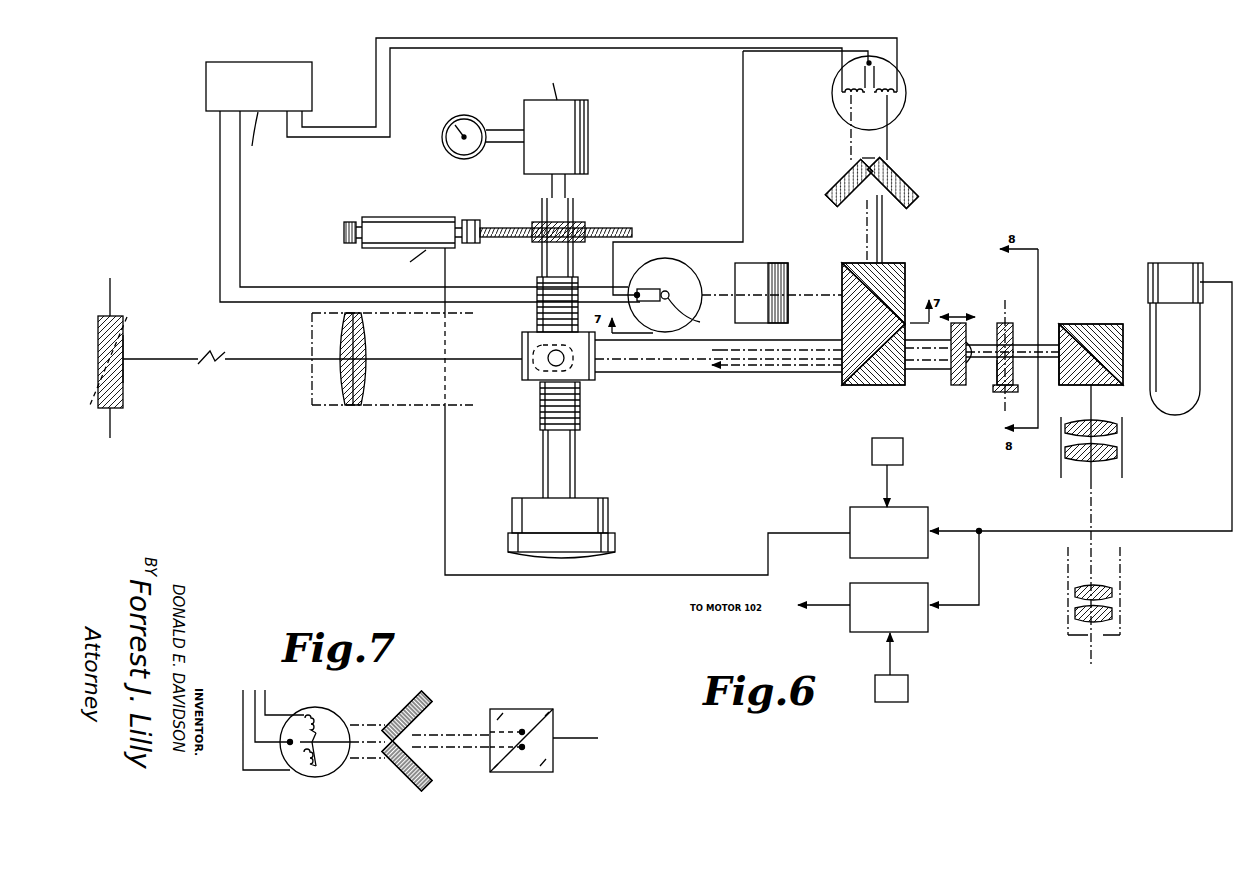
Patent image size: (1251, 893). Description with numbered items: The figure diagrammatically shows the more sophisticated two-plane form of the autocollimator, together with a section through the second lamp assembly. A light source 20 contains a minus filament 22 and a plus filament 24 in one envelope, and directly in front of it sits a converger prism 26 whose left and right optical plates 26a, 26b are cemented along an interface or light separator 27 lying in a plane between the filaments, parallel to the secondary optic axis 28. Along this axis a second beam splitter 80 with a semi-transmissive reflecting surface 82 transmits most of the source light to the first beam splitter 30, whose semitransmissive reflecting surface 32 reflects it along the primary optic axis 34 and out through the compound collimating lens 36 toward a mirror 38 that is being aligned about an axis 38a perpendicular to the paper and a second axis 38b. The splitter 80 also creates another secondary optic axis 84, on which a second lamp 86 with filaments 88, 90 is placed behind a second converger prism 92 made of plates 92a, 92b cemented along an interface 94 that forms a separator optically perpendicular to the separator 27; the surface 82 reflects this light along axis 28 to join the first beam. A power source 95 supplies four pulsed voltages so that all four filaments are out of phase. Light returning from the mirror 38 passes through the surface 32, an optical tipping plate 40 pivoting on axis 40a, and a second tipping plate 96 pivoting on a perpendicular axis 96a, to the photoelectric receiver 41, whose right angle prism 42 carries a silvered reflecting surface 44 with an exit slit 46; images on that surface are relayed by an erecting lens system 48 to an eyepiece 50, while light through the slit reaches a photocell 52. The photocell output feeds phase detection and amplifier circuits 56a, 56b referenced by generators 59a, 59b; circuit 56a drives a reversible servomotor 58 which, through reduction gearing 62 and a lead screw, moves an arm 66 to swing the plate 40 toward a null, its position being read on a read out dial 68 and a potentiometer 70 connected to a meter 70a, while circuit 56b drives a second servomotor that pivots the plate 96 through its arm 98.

In FIG. 6, the light source 20 is at (912, 78).
In FIG. 6, the minus filament 22 is at (906, 96).
In FIG. 6, the plus filament 24 is at (840, 100).
In FIG. 6, the converger prism 26 is at (913, 180).
In FIG. 6, the left optical plate 26a is at (832, 183).
In FIG. 6, the right optical plate 26b is at (916, 200).
In FIG. 6, the interface or light separator 27 is at (856, 162).
In FIG. 6, the optic axis 28 is at (884, 246).
In FIG. 6, the beam splitter 30 is at (880, 387).
In FIG. 6, the semitransmissive reflecting surface 32 is at (850, 380).
In FIG. 6, the optic axis 34 is at (655, 362).
In FIG. 6, the collimating lens 36 is at (356, 406).
In FIG. 6, the mirror 38 is at (124, 396).
In FIG. 6, the axis 38a is at (124, 357).
In FIG. 6, the second axis 38b is at (112, 284).
In FIG. 6, the optical tipping plate 40 is at (961, 387).
In FIG. 6, the pivotal axis 40a is at (970, 343).
In FIG. 6, the photoelectric receiver 41 is at (1121, 284).
In FIG. 6, the right angle prism 42 is at (1081, 325).
In FIG. 6, the reflecting surface 44 is at (1115, 387).
In FIG. 6, the exit slit 46 is at (1095, 336).
In FIG. 6, the erecting lens system 48 is at (1131, 453).
In FIG. 6, the eyepiece 50 is at (1131, 604).
In FIG. 6, the photocell 52 is at (1184, 264).
In FIG. 6, the phase detection and amplifier circuit 56a is at (850, 517).
In FIG. 6, the phase detection and amplifier circuit 56b is at (929, 627).
In FIG. 6, the servomotor 58 is at (437, 205).
In FIG. 6, the reference signal generator 59a is at (871, 451).
In FIG. 6, the reference signal generator 59b is at (909, 694).
In FIG. 6, the reduction gearing 62 is at (533, 226).
In FIG. 6, the arm 66 is at (716, 375).
In FIG. 6, the read out dial 68 is at (608, 518).
In FIG. 6, the potentiometer 70 is at (589, 133).
In FIG. 6, the meter 70a is at (482, 117).
In FIG. 6, the second beam splitter 80 is at (855, 262).
In FIG. 6, the semi-transmissive reflecting surface 82 is at (843, 268).
In FIG. 6, the secondary optic axis 84 is at (803, 298).
In FIG. 7, the secondary optic axis 84 is at (452, 748).
In FIG. 6, the second lamp 86 is at (690, 270).
In FIG. 7, the second lamp 86 is at (333, 712).
In FIG. 6, the filament 88 is at (692, 317).
In FIG. 7, the filament 88 is at (312, 716).
In FIG. 7, the filament 90 is at (322, 768).
In FIG. 6, the second converger prism 92 is at (748, 264).
In FIG. 7, the second converger prism 92 is at (428, 694).
In FIG. 7, the optical plate 92a is at (400, 710).
In FIG. 7, the optical plate 92b is at (400, 781).
In FIG. 7, the interface or second light separator 94 is at (440, 712).
In FIG. 6, the power source 95 is at (280, 111).
In FIG. 6, the second optical tipping plate 96 is at (1006, 323).
In FIG. 6, the pivotal axis 96a is at (1001, 399).
In FIG. 6, the arm 98 is at (1012, 393).